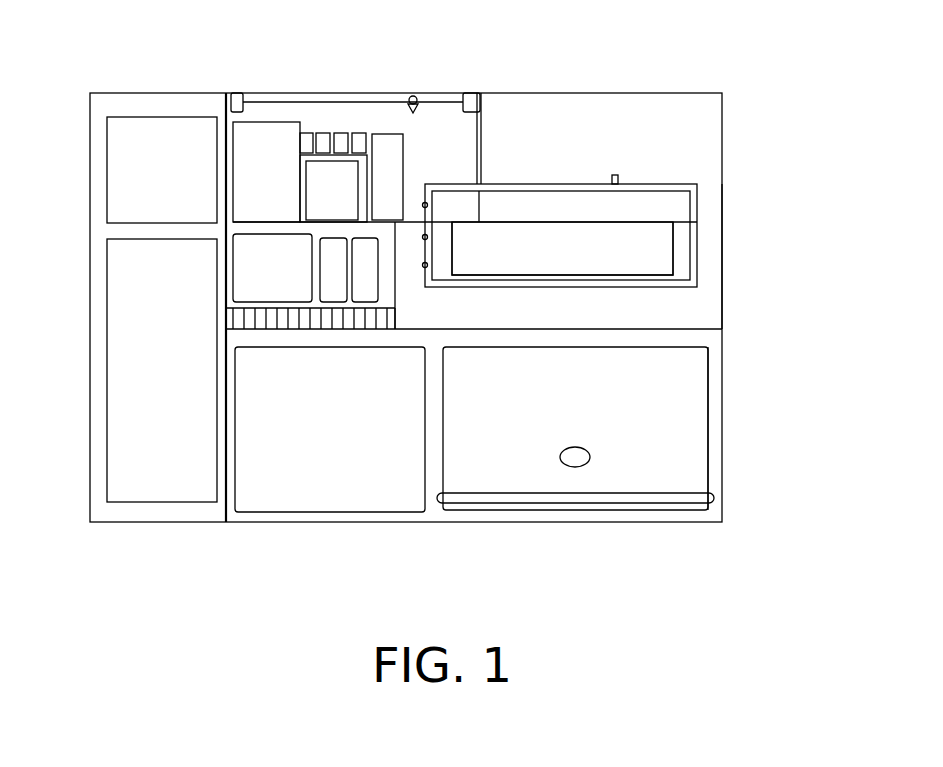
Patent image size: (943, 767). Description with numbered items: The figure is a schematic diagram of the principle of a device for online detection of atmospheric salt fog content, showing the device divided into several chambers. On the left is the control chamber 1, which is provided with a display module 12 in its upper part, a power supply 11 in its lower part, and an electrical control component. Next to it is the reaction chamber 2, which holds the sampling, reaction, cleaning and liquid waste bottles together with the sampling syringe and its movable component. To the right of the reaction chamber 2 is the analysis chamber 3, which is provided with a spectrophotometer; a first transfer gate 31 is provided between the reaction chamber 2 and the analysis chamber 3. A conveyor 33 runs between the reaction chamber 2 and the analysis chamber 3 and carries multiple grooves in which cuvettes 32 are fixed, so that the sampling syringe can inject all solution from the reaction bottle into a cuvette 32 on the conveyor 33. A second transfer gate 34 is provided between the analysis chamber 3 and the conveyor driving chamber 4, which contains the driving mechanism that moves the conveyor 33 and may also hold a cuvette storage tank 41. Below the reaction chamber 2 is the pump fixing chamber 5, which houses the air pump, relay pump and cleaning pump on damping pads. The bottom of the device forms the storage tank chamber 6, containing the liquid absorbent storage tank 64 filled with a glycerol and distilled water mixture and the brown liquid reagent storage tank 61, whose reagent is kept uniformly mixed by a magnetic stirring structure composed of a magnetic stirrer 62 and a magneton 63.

The control chamber 1 is at (103, 81).
The power supply 11 is at (96, 339).
The display module 12 is at (94, 182).
The reaction chamber 2 is at (330, 80).
The analysis chamber 3 is at (597, 80).
The first transfer gate 31 is at (487, 140).
The cuvette 32 is at (632, 174).
The conveyor 33 is at (691, 177).
The second transfer gate 34 is at (712, 217).
The conveyor driving chamber 4 is at (735, 294).
The cuvette storage tank 41 is at (688, 256).
The pump fixing chamber 5 is at (410, 301).
The storage tank chamber 6 is at (735, 453).
The liquid reagent storage tank 61 is at (722, 485).
The magnetic stirrer 62 is at (677, 512).
The magneton 63 is at (586, 478).
The liquid absorbent storage tank 64 is at (382, 522).